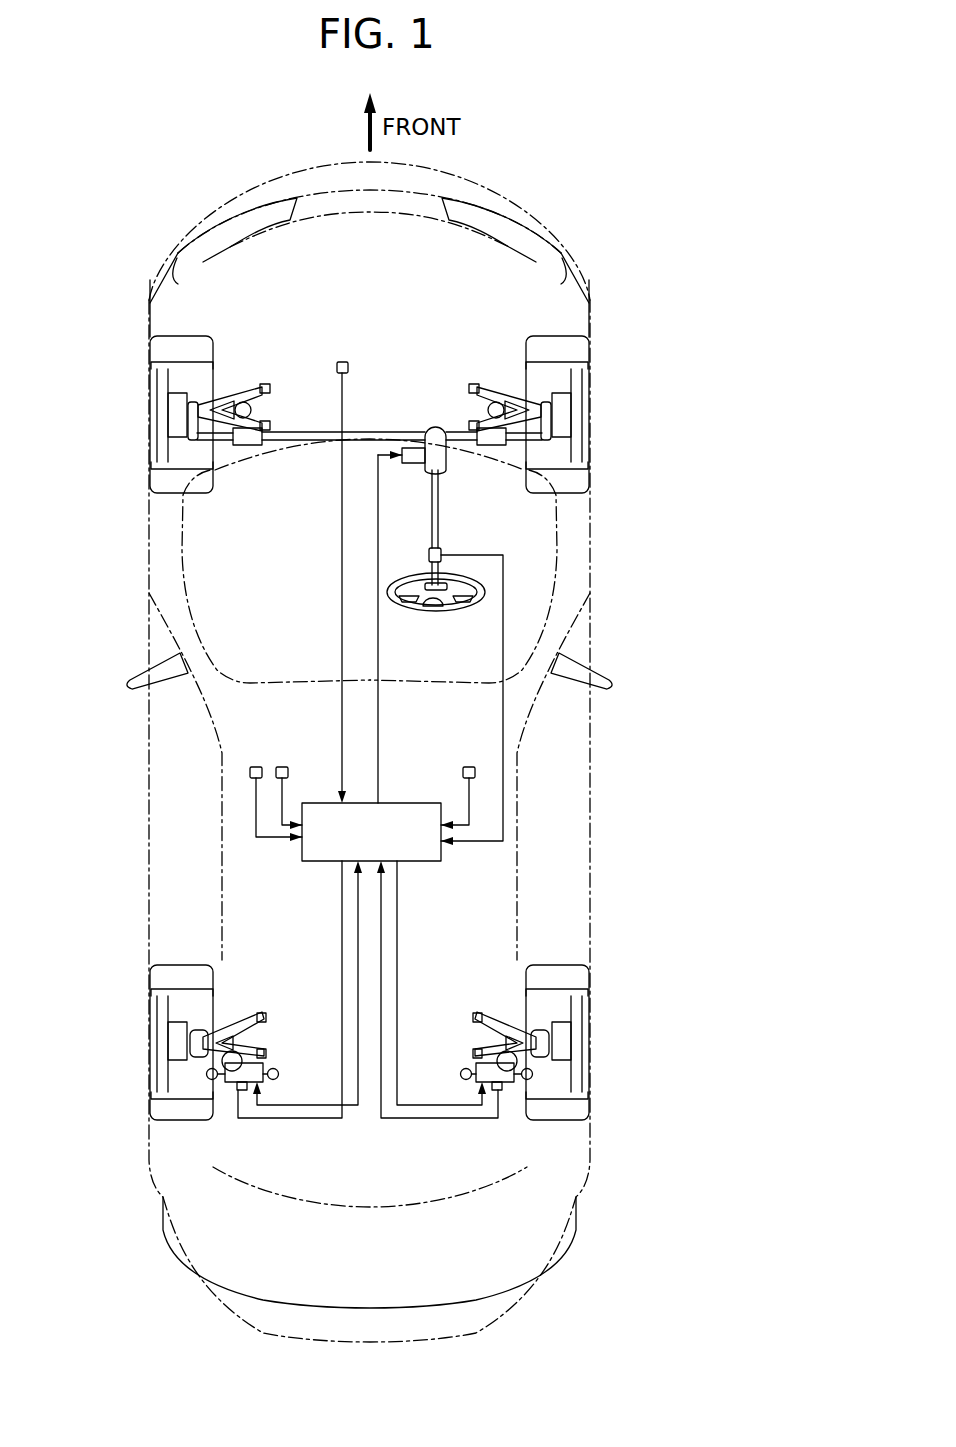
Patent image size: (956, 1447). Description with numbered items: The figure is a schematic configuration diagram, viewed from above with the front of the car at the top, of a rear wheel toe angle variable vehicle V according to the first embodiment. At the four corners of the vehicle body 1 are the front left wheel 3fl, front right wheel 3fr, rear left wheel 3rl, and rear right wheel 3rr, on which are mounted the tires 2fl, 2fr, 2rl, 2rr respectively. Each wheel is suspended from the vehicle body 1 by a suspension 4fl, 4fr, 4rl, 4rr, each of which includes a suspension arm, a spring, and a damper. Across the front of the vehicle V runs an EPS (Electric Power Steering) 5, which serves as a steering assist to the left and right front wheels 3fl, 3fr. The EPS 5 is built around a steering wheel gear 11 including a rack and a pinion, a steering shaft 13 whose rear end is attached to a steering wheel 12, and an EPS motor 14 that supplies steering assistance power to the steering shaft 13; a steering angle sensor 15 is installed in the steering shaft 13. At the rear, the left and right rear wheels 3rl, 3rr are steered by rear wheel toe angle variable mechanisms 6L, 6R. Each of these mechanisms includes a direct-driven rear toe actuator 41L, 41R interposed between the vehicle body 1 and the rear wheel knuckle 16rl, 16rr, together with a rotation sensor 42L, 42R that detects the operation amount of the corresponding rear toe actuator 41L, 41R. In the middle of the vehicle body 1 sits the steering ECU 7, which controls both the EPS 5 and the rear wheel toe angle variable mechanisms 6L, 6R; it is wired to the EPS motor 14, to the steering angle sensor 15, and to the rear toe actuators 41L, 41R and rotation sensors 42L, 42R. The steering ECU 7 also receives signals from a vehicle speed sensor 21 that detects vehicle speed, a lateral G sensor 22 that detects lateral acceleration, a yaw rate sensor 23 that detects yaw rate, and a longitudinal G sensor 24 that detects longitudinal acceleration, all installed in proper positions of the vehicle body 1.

The vehicle V is at (146, 205).
The vehicle body 1 is at (582, 228).
The front left tire 2fl is at (160, 490).
The front right tire 2fr is at (580, 490).
The rear left tire 2rl is at (160, 1122).
The rear right tire 2rr is at (580, 1122).
The front left wheel 3fl is at (158, 378).
The front right wheel 3fr is at (582, 378).
The rear left wheel 3rl is at (158, 1005).
The rear right wheel 3rr is at (581, 1005).
The front left suspension 4fl is at (223, 390).
The front right suspension 4fr is at (517, 390).
The rear left suspension 4rl is at (200, 1063).
The rear right suspension 4rr is at (539, 1063).
The EPS (Electric Power Steering) 5 is at (420, 385).
The left rear wheel toe angle variable mechanism 6L is at (266, 1140).
The right rear wheel toe angle variable mechanism 6R is at (472, 1140).
The steering ECU 7 is at (412, 803).
The steering wheel gear 11 is at (300, 446).
The steering wheel 12 is at (430, 600).
The steering shaft 13 is at (432, 538).
The EPS motor 14 is at (410, 462).
The steering angle sensor 15 is at (442, 557).
The rear left wheel knuckle 16rl is at (195, 1045).
The rear right wheel knuckle 16rr is at (544, 1045).
The vehicle speed sensor 21 is at (337, 363).
The lateral G sensor 22 is at (253, 764).
The yaw rate sensor 23 is at (280, 764).
The longitudinal G sensor 24 is at (467, 764).
The left rear toe actuator 41L is at (265, 1066).
The right rear toe actuator 41R is at (474, 1066).
The left rotation sensor 42L is at (238, 1090).
The right rotation sensor 42R is at (501, 1090).